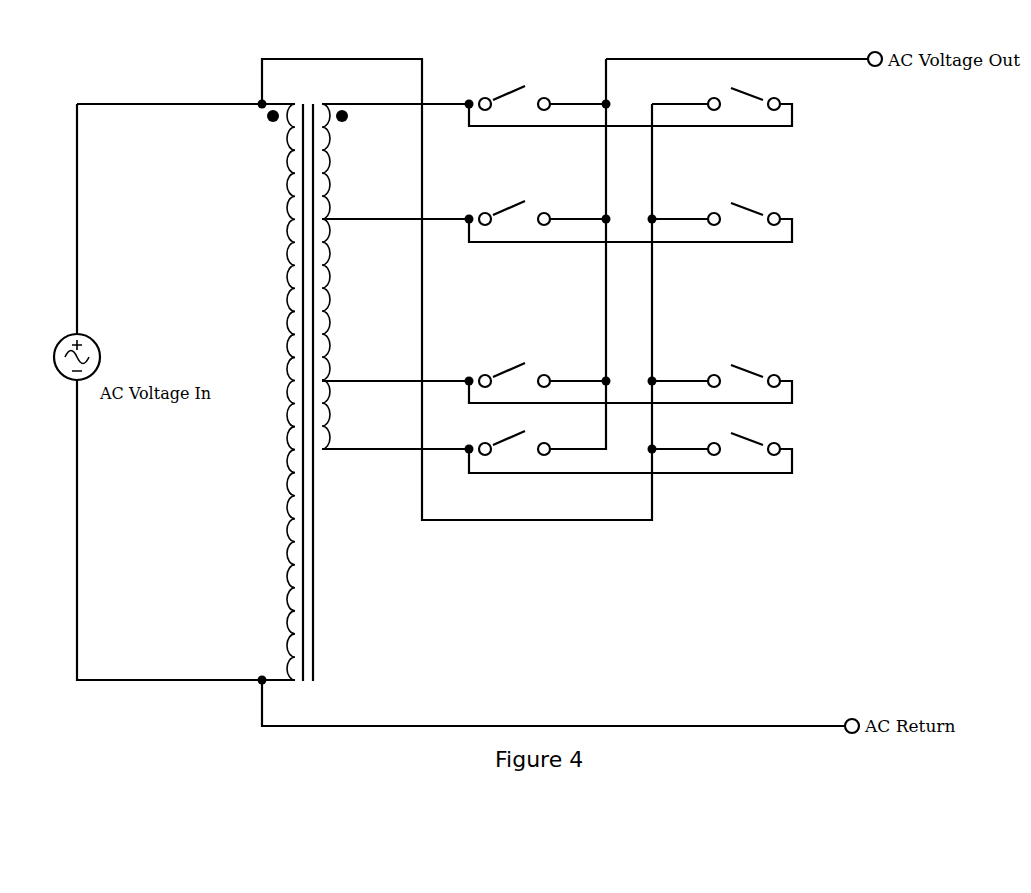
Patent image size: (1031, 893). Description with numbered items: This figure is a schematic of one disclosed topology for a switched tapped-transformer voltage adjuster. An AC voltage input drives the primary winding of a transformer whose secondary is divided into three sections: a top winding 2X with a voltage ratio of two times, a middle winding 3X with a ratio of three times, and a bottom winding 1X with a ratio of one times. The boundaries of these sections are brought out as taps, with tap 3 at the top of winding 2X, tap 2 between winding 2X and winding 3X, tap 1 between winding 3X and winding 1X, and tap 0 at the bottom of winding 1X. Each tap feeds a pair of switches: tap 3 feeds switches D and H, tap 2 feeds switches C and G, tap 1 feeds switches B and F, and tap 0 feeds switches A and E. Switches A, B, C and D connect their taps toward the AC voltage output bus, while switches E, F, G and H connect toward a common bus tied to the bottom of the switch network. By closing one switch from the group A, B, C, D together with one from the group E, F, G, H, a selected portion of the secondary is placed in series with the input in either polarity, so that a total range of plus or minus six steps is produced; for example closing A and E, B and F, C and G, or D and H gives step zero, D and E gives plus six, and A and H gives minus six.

The tap 3 is at (395, 93).
The tap 2 is at (395, 210).
The tap 1 is at (395, 372).
The tap 0 is at (395, 439).
The top winding 2X is at (361, 161).
The middle winding 3X is at (361, 299).
The bottom winding 1X is at (361, 414).
The switch A is at (629, 443).
The switch B is at (629, 373).
The switch C is at (629, 211).
The switch D is at (629, 96).
The switch E is at (714, 434).
The switch F is at (714, 365).
The switch G is at (714, 203).
The switch H is at (716, 88).